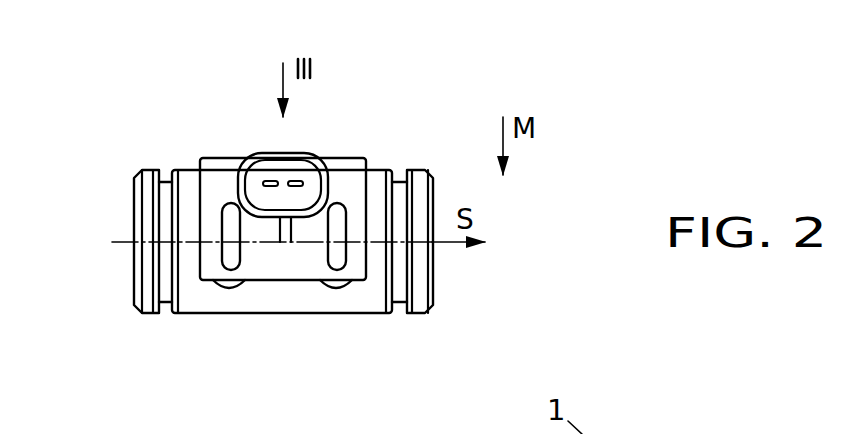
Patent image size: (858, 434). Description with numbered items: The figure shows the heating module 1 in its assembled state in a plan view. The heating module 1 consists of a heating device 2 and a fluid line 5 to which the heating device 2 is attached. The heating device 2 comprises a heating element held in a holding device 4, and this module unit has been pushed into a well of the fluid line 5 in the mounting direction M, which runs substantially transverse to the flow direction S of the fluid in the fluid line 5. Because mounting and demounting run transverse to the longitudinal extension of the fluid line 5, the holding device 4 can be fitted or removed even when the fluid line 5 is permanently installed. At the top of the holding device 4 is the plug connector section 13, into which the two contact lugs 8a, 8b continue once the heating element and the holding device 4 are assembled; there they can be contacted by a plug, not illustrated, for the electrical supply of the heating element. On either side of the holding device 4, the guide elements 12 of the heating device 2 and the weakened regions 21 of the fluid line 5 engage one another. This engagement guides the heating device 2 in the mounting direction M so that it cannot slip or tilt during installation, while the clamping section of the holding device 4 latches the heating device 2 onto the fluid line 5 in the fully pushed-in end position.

The heating module 1 is at (168, 97).
The heating device 2 is at (218, 148).
The holding device 4 is at (266, 268).
The fluid line 5 is at (445, 280).
The contact lug 8a is at (270, 181).
The contact lug 8b is at (296, 182).
The guide element 12 is at (226, 252).
The plug connector section 13 is at (322, 202).
The weakened region 21 is at (230, 283).